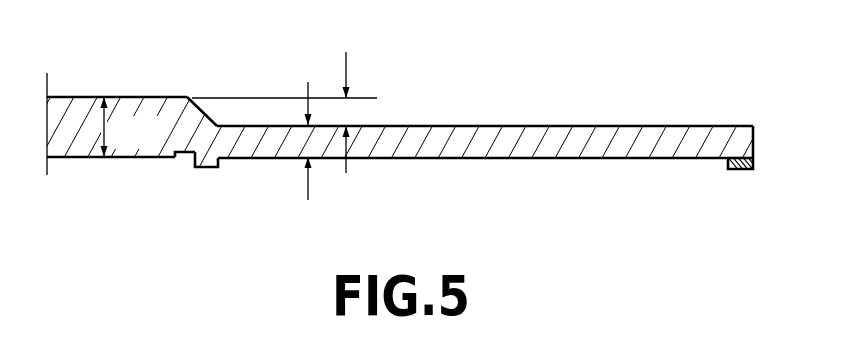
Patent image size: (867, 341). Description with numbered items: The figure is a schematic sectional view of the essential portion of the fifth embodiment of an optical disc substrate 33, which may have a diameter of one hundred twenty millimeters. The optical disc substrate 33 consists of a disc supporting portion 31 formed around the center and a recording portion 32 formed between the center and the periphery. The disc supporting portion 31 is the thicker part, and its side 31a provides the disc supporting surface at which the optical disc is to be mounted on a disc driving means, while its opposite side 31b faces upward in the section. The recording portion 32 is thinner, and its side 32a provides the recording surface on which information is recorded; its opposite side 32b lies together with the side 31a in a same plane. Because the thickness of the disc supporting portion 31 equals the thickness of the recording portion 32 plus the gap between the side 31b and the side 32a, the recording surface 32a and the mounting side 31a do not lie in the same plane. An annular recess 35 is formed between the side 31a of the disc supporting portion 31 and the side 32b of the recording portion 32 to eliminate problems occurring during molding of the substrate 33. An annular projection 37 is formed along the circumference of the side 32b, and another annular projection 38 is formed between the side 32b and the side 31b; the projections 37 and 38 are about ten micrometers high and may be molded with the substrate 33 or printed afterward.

The disc supporting portion 31 is at (65, 157).
The side of the disc supporting portion 31a is at (117, 157).
The side of the disc supporting portion opposite to the side 31a 31b is at (124, 97).
The recording portion 32 is at (502, 158).
The side of the recording portion 32a is at (548, 126).
The side of the recording portion opposite to the side 32a 32b is at (572, 158).
The optical disc substrate 33 is at (673, 104).
The annular recess 35 is at (187, 153).
The annular projection 37 is at (737, 170).
The annular projection 38 is at (215, 168).